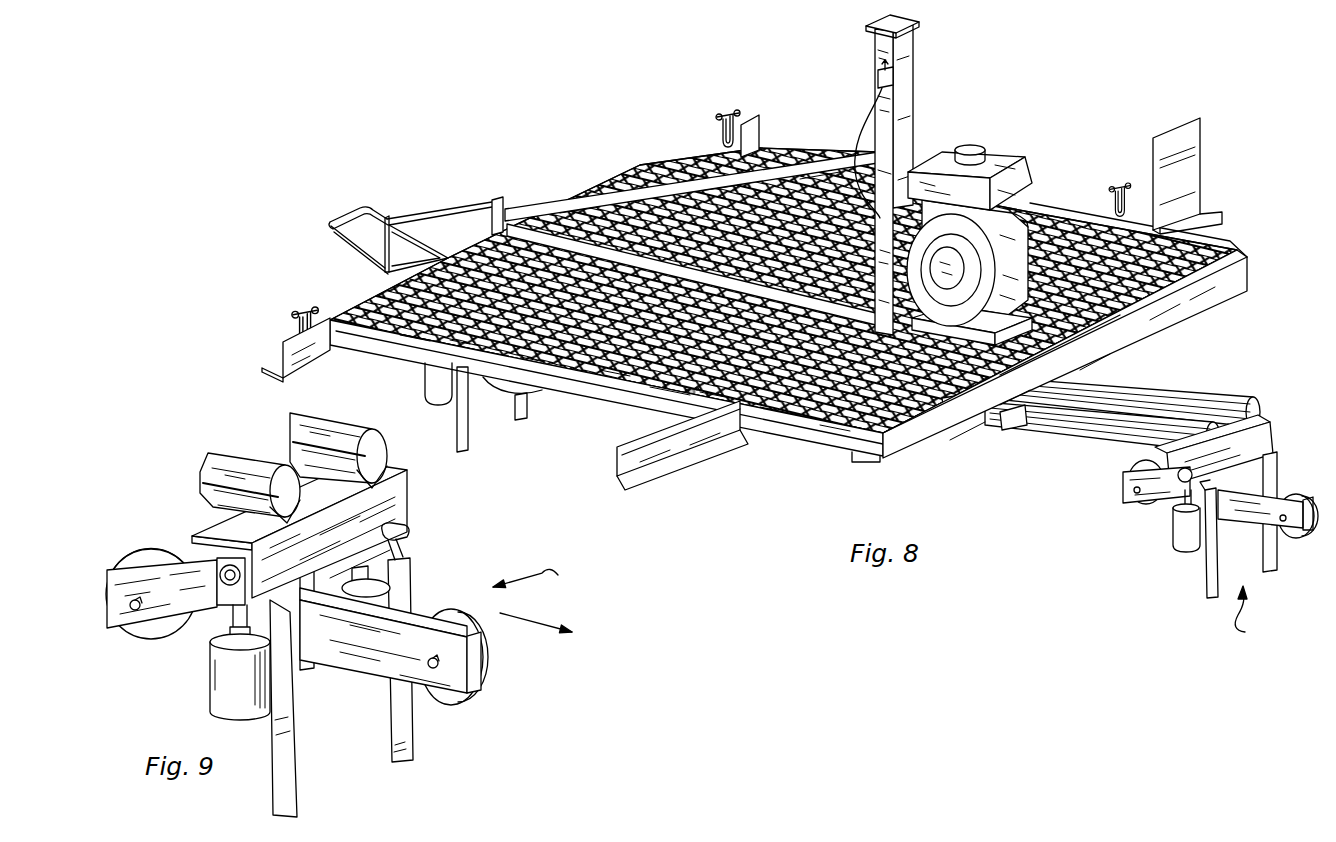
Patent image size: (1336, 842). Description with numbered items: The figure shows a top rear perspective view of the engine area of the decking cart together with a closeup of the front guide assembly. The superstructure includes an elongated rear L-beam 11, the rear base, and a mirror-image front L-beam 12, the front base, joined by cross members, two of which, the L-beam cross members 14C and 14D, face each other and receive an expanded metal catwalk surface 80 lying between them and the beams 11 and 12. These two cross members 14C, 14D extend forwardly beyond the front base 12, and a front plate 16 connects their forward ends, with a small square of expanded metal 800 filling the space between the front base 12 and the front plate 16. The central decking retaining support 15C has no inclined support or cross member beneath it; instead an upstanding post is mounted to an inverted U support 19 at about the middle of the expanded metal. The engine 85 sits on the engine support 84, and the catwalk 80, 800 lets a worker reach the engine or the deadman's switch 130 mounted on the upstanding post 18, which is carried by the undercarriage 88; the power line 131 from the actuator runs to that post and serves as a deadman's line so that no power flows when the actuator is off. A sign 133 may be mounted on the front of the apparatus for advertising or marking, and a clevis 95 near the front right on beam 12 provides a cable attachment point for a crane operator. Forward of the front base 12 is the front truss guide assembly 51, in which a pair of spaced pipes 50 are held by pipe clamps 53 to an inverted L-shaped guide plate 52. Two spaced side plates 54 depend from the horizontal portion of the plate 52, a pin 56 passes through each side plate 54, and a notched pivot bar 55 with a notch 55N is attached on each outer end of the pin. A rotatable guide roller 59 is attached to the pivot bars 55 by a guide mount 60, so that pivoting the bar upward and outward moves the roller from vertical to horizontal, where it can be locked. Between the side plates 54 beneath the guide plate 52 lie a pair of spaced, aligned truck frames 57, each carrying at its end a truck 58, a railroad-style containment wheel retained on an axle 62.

In FIG. 8, the rear L-beam 11 is at (323, 350).
In FIG. 8, the front L-beam 12 is at (692, 466).
In FIG. 8, the cross member 14C is at (1248, 248).
In FIG. 8, the cross member 14D is at (840, 435).
In FIG. 8, the decking retaining support 15C is at (813, 166).
In FIG. 8, the front plate 16 is at (903, 445).
In FIG. 8, the upstanding post 18 is at (910, 100).
In FIG. 8, the inverted U support 19 is at (790, 378).
In FIG. 8, the spaced pipes 50 is at (1203, 388).
In FIG. 9, the spaced pipes 50 is at (237, 462).
In FIG. 8, the front truss guide assembly 51 is at (1255, 614).
In FIG. 9, the front truss guide assembly 51 is at (539, 597).
In FIG. 8, the guide plate 52 is at (1272, 443).
In FIG. 9, the guide plate 52 is at (333, 499).
In FIG. 8, the pipe clamps 53 is at (1240, 385).
In FIG. 9, the side plates 54 is at (300, 655).
In FIG. 8, the notched pivot bar 55 is at (1205, 578).
In FIG. 9, the notched pivot bar 55 is at (408, 720).
In FIG. 9, the notch 55N is at (408, 527).
In FIG. 9, the pin 56 is at (217, 571).
In FIG. 8, the truck frames 57 is at (1250, 515).
In FIG. 9, the truck frames 57 is at (343, 657).
In FIG. 8, the truck 58 is at (1298, 540).
In FIG. 9, the truck 58 is at (143, 557).
In FIG. 8, the guide roller 59 is at (1186, 527).
In FIG. 9, the guide roller 59 is at (212, 686).
In FIG. 9, the guide mount 60 is at (208, 630).
In FIG. 9, the axle 62 is at (431, 662).
In FIG. 8, the expanded metal catwalk surface 80 is at (385, 297).
In FIG. 8, the engine support 84 is at (1108, 330).
In FIG. 8, the engine 85 is at (1023, 190).
In FIG. 8, the undercarriage 88 is at (1010, 420).
In FIG. 8, the clevis 95 is at (716, 128).
In FIG. 8, the deadman's switch 130 is at (882, 70).
In FIG. 8, the power line 131 is at (862, 128).
In FIG. 8, the sign 133 is at (1190, 160).
In FIG. 8, the expanded metal 800 is at (950, 408).